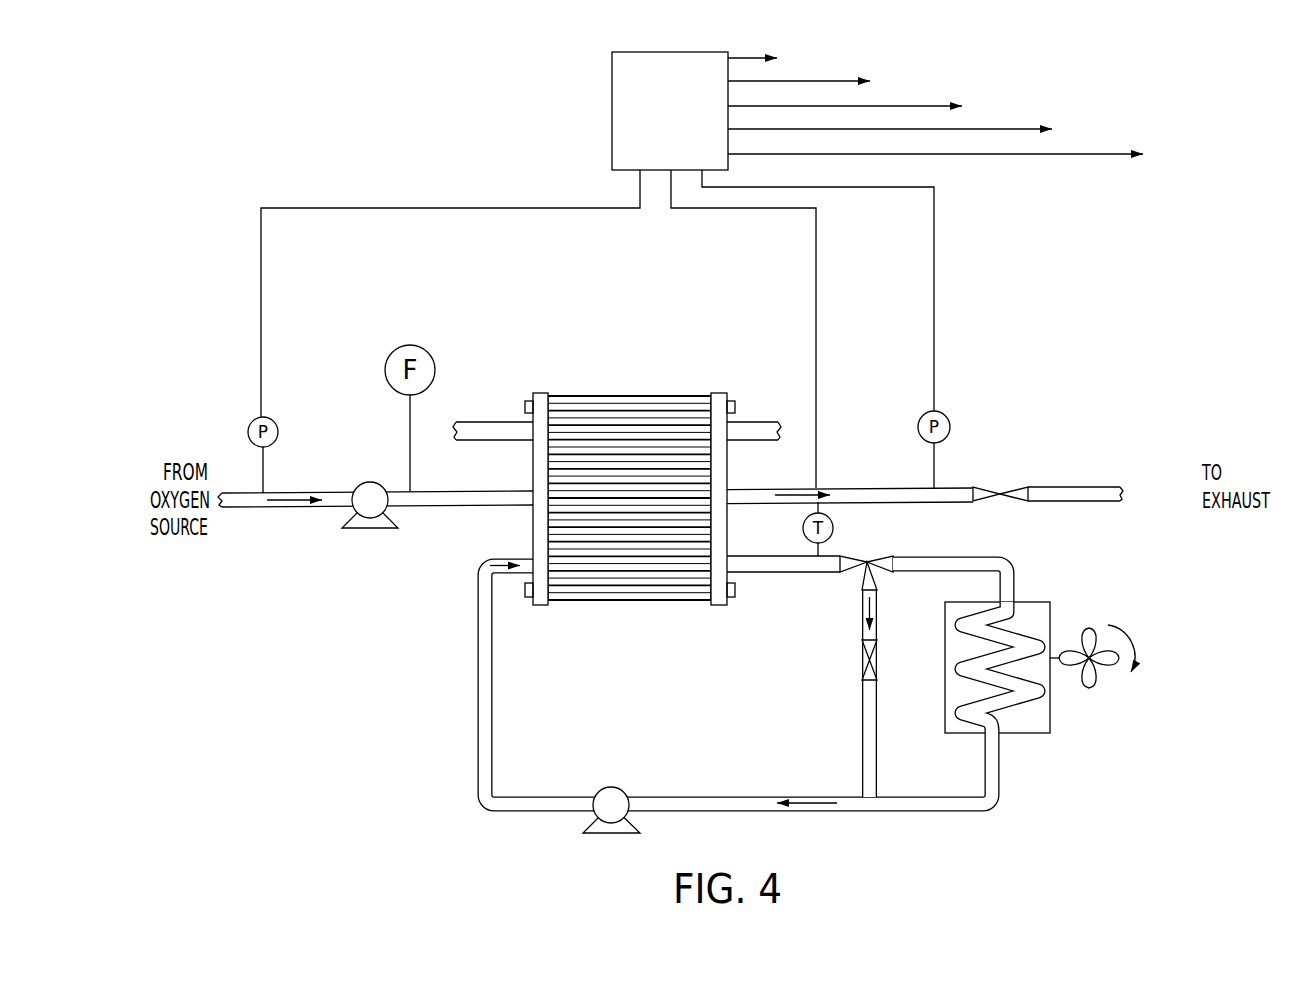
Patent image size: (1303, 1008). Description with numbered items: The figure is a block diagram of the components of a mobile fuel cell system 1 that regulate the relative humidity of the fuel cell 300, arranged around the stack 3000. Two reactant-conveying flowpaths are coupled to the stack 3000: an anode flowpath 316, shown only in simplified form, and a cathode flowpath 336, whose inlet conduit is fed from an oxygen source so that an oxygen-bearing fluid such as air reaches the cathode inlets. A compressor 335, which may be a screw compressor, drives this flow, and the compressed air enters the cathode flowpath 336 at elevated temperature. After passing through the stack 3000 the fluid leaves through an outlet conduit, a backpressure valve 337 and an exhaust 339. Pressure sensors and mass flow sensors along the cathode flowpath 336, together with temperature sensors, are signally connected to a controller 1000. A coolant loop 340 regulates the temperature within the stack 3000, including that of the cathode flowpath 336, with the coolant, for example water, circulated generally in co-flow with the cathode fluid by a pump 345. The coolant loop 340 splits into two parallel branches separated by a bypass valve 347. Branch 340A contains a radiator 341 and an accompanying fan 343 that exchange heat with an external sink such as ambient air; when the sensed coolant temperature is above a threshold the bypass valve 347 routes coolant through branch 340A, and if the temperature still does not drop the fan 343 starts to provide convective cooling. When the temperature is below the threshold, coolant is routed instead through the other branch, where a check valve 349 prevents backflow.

The mobile fuel cell system 1 is at (237, 128).
The controller 1000 is at (625, 112).
The stack 3000 is at (630, 463).
The fuel cell 300 is at (646, 580).
The anode flowpath 316 is at (471, 422).
The compressor 335 is at (365, 528).
The cathode flowpath 336 is at (449, 507).
The backpressure valve 337 is at (1010, 487).
The exhaust 339 is at (1122, 493).
The coolant loop 340 is at (480, 750).
The branch 340A is at (1008, 578).
The radiator 341 is at (1024, 733).
The fan 343 is at (1090, 686).
The pump 345 is at (605, 833).
The bypass valve 347 is at (872, 556).
The check valve 349 is at (862, 660).